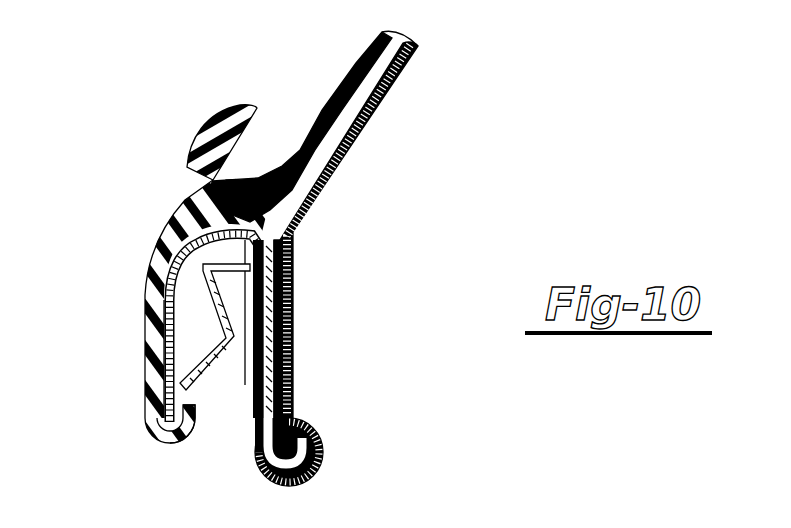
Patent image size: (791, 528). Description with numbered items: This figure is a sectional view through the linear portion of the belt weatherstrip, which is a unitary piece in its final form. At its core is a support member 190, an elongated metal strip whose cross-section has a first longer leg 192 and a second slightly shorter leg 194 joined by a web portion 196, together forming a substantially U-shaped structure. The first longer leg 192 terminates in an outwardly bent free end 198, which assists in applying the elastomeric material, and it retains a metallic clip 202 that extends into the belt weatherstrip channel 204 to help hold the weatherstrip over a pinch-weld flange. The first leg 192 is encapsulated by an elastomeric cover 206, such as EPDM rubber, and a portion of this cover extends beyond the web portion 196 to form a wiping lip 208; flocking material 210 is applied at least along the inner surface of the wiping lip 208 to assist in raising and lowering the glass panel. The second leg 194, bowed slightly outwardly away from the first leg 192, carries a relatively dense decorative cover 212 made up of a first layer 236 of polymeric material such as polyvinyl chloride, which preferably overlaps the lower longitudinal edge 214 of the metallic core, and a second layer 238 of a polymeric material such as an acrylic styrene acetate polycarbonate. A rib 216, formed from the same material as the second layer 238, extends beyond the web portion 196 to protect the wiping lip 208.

The support member 190 is at (292, 270).
The first longer leg 192 is at (292, 350).
The second slightly shorter leg 194 is at (147, 383).
The web portion 196 is at (250, 184).
The outwardly bent free end 198 is at (322, 455).
The metallic clip 202 is at (290, 308).
The belt weatherstrip channel 204 is at (235, 403).
The elastomeric cover 206 is at (310, 192).
The wiping lip 208 is at (348, 122).
The flocking material 210 is at (400, 90).
The decorative cover 212 is at (150, 256).
The lower longitudinal edge 214 is at (184, 441).
The rib 216 is at (205, 130).
The first layer 236 is at (162, 416).
The second layer 238 is at (150, 296).